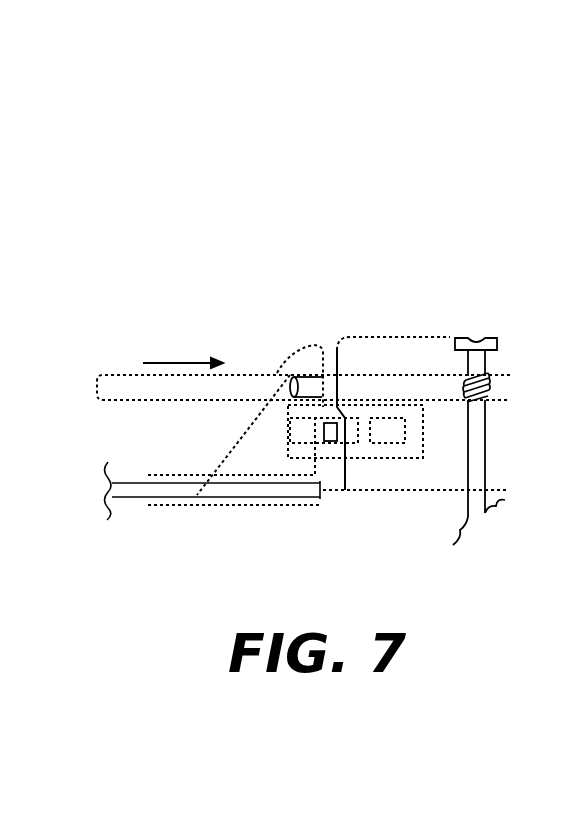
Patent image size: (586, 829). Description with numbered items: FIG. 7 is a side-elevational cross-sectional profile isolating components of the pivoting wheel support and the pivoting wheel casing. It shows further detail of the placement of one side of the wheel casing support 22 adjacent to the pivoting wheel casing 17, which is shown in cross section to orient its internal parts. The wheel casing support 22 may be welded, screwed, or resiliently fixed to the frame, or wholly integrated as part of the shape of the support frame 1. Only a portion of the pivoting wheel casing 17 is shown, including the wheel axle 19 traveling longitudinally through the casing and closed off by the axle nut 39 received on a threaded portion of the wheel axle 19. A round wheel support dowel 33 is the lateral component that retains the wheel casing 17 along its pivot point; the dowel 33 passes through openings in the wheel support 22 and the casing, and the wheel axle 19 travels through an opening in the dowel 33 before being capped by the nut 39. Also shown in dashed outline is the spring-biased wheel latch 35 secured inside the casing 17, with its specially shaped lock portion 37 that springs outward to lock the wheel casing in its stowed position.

The support frame 1 is at (130, 492).
The pivoting wheel casing 17 is at (365, 473).
The wheel axle 19 is at (478, 465).
The wheel casing support 22 is at (267, 438).
The wheel support dowel 33 is at (391, 380).
The wheel latch 35 is at (424, 458).
The lock portion 37 is at (275, 372).
The axle nut 39 is at (487, 336).